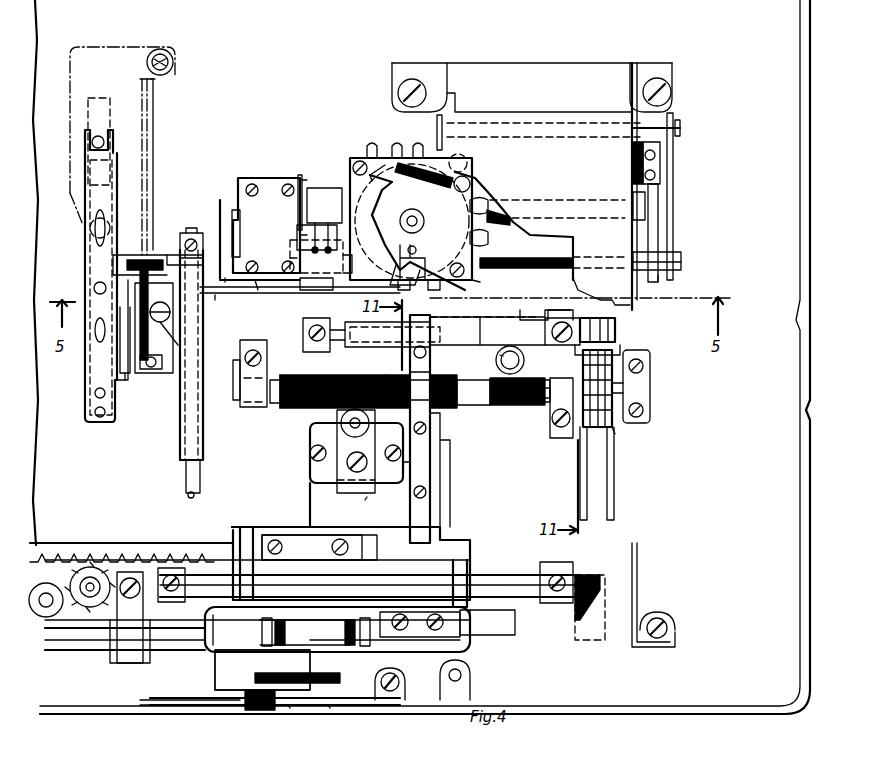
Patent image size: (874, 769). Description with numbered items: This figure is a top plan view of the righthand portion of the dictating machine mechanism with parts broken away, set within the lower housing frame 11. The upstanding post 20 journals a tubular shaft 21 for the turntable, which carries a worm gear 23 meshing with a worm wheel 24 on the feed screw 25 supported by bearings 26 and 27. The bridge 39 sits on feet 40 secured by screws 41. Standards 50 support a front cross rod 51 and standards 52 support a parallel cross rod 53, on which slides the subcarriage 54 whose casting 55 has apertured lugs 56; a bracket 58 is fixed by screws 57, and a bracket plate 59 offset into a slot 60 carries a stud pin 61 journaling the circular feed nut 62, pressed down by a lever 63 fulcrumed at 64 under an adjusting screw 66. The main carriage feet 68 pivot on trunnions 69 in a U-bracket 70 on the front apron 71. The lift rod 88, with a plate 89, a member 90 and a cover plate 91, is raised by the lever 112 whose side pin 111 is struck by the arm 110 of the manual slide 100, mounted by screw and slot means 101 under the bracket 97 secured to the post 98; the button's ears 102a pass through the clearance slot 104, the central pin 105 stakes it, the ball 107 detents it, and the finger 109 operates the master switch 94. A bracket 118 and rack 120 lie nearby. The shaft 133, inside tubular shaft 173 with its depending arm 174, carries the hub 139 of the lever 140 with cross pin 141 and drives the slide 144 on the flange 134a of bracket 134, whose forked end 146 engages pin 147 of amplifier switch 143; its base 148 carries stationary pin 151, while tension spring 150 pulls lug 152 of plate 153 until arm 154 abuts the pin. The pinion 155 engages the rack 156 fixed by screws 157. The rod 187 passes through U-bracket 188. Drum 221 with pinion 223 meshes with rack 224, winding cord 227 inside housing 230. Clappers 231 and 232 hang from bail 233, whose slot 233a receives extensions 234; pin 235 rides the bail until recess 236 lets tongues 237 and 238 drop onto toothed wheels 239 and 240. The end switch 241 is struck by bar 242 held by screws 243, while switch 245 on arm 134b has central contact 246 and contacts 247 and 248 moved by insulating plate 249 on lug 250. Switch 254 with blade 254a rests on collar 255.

The frame 11 is at (700, 716).
The upstanding post 20 is at (500, 355).
The tubular shaft 21 is at (502, 362).
The worm gear 23 is at (522, 400).
The worm wheel 24 is at (496, 410).
The feed screw 25 is at (330, 375).
The bearing 26 is at (253, 408).
The bearing 27 is at (550, 425).
The bridge 39 is at (640, 308).
The bridge feet 40 is at (395, 73).
The screws 41 is at (398, 90).
The standards 50 is at (164, 602).
The front cross rod 51 is at (488, 575).
The standards 52 is at (303, 322).
The cross rod 53 is at (342, 345).
The subcarriage 54 is at (442, 496).
The casting 55 is at (330, 520).
The apertured lugs 56 is at (245, 570).
The screws 57 is at (425, 490).
The bracket 58 is at (432, 322).
The bracket plate 59 is at (318, 467).
The open-ended slot 60 is at (338, 490).
The vertical stud pin 61 is at (341, 423).
The circular feed nut 62 is at (385, 375).
The lever 63 is at (365, 500).
The fulcrum 64 is at (375, 500).
The adjusting screw 66 is at (412, 459).
The feet 68 is at (315, 630).
The trunnions 69 is at (316, 632).
The U-bracket 70 is at (262, 655).
The front apron 71 is at (400, 640).
The lift rod 88 is at (560, 262).
The plate 89 is at (437, 135).
The plate 90 is at (674, 156).
The top plate 91 is at (568, 120).
The master switch 94 is at (156, 321).
The bracket 97 is at (115, 47).
The post 98 is at (173, 64).
The manual slide 100 is at (90, 382).
The screw and slot means 101 is at (92, 235).
The depending ears 102a is at (115, 140).
The clearance slot 104 is at (110, 110).
The central pin 105 is at (100, 150).
The ball 107 is at (94, 286).
The finger 109 is at (180, 238).
The right-angle arm 110 is at (130, 373).
The side pin 111 is at (118, 382).
The lever 112 is at (162, 353).
The bracket 118 is at (460, 688).
The rack 120 is at (55, 543).
The shaft 133 is at (186, 478).
The bracket 134 is at (238, 180).
The vertical flange 134a is at (290, 258).
The arm 134b is at (298, 190).
The hub 139 is at (172, 232).
The lever 140 is at (214, 245).
The cross pin 141 is at (258, 290).
The amplifier-reversing switch 143 is at (474, 280).
The slide 144 is at (225, 282).
The forked end portion 146 is at (397, 262).
The pin 147 is at (400, 245).
The base 148 is at (373, 143).
The tension spring 150 is at (425, 188).
The stationary pin 151 is at (476, 181).
The lug 152 is at (348, 170).
The plate 153 is at (417, 227).
The arm 154 is at (465, 156).
The pinion wheel 155 is at (75, 645).
The rack 156 is at (92, 545).
The screws 157 is at (319, 547).
The tubular shaft 173 is at (180, 452).
The depending arm 174 is at (215, 300).
The rod 187 is at (170, 650).
The U-bracket 188 is at (122, 663).
The drum 221 is at (290, 708).
The pinion gear 223 is at (262, 710).
The rack 224 is at (330, 708).
The cord 227 is at (310, 676).
The cylindrical housing 230 is at (262, 670).
The clapper 231 is at (575, 460).
The clapper 232 is at (615, 470).
The bail 233 is at (470, 314).
The slot 233a is at (601, 286).
The extensions 234 is at (617, 333).
The pin 235 is at (428, 352).
The recess 236 is at (455, 338).
The tongue 237 is at (585, 360).
The tongue 238 is at (650, 375).
The toothed wheel 239 is at (600, 427).
The toothed wheel 240 is at (615, 434).
The end switch 241 is at (595, 572).
The bar 242 is at (492, 635).
The screws 243 is at (440, 632).
The single-pole double-throw switch 245 is at (298, 180).
The central contact 246 is at (324, 220).
The movable contact 247 is at (300, 235).
The movable contact 248 is at (363, 266).
The insulating plate 249 is at (292, 248).
The lug 250 is at (300, 284).
The switch 254 is at (660, 212).
The switch blade 254a is at (660, 278).
The insulating collar 255 is at (665, 252).